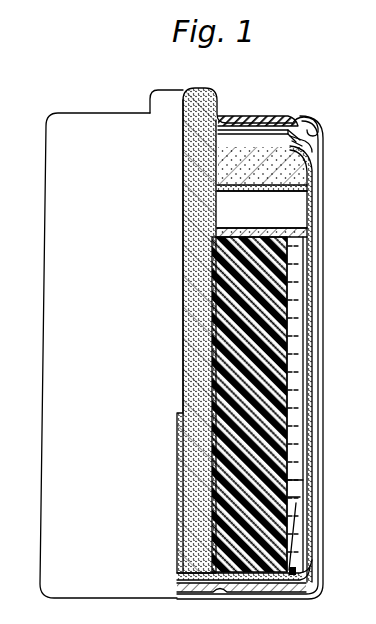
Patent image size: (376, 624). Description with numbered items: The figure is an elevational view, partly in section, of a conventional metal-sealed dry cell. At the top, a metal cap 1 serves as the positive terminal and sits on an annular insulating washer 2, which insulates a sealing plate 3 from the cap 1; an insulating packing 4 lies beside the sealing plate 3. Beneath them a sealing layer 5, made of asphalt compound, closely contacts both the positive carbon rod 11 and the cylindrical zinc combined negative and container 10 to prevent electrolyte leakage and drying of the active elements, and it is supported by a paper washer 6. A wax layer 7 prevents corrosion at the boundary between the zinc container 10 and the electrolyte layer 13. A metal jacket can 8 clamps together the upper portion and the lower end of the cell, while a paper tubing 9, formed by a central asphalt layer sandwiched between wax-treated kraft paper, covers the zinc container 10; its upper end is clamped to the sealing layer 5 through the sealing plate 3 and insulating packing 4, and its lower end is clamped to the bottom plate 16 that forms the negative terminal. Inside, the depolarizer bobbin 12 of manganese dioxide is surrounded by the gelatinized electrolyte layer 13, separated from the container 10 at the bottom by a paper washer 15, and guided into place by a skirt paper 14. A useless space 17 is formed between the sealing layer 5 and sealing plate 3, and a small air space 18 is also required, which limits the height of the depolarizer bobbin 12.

The metal cap 1 is at (205, 89).
The annular insulating washer 2 is at (240, 117).
The sealing plate 3 is at (292, 120).
The insulating packing 4 is at (314, 139).
The sealing layer 5 is at (313, 164).
The paper washer 6 is at (310, 187).
The wax layer 7 is at (313, 237).
The metal jacket can 8 is at (312, 254).
The paper tubing 9 is at (305, 282).
The combined negative and container 10 is at (300, 318).
The positive carbon rod 11 is at (183, 393).
The depolarizer bobbin 12 is at (290, 392).
The electrolyte layer 13 is at (295, 482).
The skirt paper 14 is at (289, 520).
The paper washer 15 is at (302, 582).
The bottom plate 16 is at (263, 598).
The useless space 17 is at (262, 130).
The air space 18 is at (300, 212).